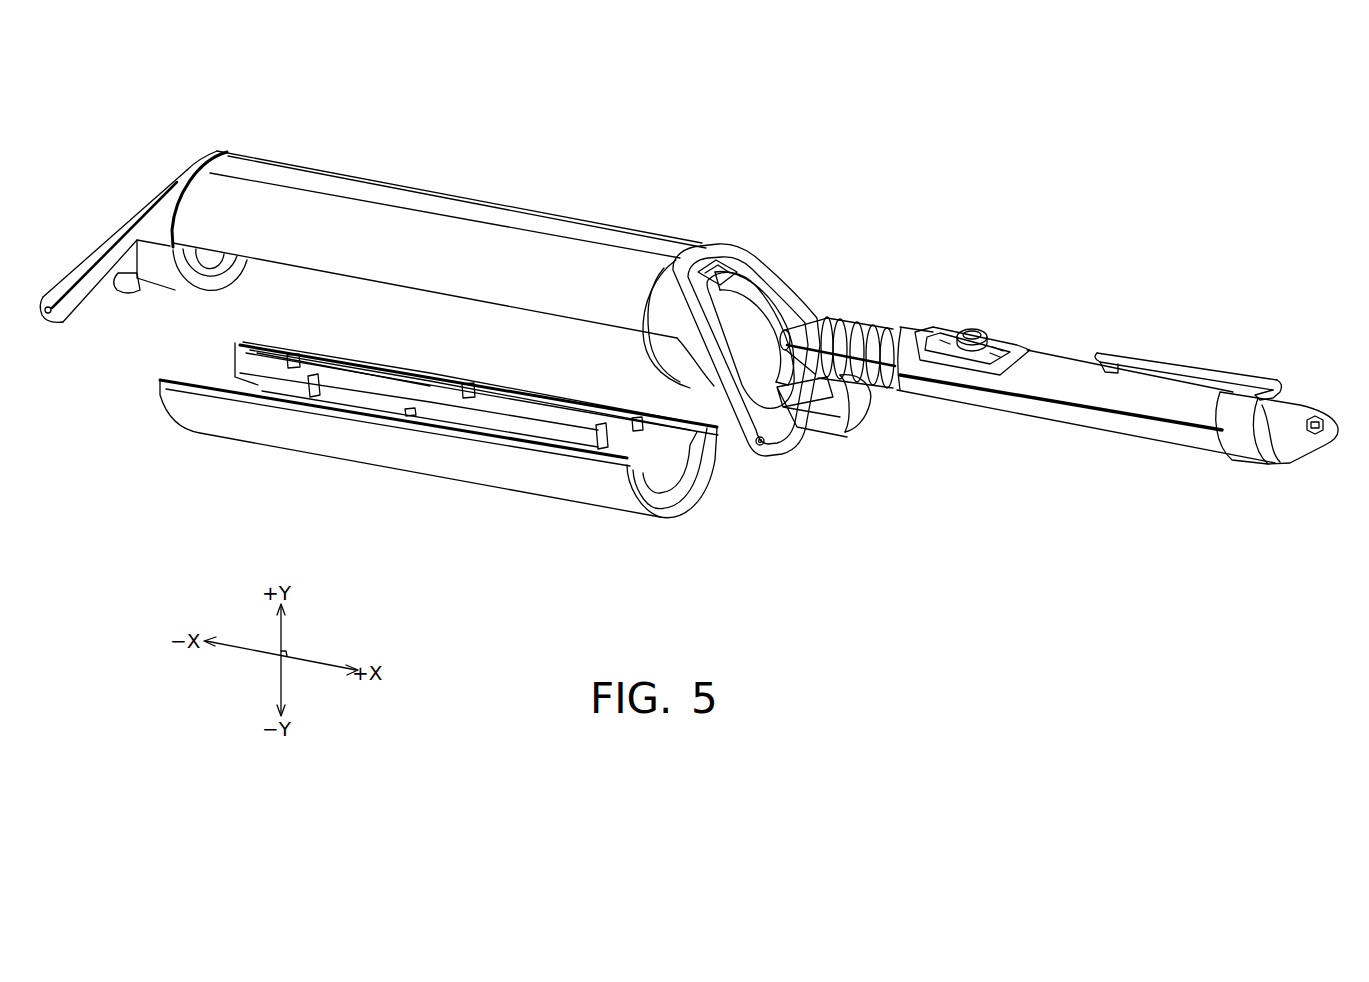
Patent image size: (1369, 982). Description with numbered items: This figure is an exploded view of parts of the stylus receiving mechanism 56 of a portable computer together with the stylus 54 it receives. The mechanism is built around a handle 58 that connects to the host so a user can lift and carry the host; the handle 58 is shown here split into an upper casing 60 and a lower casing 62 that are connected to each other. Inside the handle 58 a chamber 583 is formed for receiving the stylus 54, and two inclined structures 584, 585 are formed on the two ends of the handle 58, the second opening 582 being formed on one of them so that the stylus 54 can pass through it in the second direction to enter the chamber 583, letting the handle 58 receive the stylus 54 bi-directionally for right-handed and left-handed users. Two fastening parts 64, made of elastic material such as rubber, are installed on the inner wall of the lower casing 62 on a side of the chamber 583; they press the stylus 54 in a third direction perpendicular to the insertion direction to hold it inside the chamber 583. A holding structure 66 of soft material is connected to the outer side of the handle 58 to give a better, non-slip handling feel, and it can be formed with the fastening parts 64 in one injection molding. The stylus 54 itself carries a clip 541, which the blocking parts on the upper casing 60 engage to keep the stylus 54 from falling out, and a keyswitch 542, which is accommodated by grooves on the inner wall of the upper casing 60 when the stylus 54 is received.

The stylus receiving mechanism 56 is at (598, 152).
The inclined structure 584 is at (121, 215).
The chamber 583 is at (255, 312).
The inclined structure 585 is at (760, 268).
The second opening 582 is at (750, 312).
The upper casing 60 is at (795, 476).
The stylus 54 is at (1049, 450).
The clip 541 is at (1200, 370).
The keyswitch 542 is at (975, 330).
The holding structure 66 is at (447, 478).
The lower casing 62 is at (718, 512).
The fastening part 64 is at (332, 386).
The handle 58 is at (870, 520).